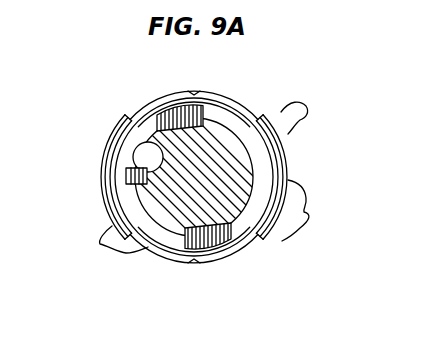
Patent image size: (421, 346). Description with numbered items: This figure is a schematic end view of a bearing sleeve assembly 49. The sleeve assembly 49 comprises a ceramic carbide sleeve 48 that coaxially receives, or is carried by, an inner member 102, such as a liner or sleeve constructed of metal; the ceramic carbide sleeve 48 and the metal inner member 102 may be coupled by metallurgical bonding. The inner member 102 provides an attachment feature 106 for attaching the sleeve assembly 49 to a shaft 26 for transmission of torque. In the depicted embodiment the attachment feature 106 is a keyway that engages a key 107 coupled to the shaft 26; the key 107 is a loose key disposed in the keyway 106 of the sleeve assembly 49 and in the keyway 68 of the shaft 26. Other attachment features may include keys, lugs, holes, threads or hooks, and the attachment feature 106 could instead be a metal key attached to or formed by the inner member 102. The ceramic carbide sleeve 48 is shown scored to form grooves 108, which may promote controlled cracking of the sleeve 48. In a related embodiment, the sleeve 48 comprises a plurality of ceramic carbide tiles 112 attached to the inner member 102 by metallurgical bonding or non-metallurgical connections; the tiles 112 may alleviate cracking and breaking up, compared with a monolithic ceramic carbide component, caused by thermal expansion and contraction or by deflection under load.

The shaft 26 is at (212, 192).
The ceramic carbide sleeve 48 is at (150, 103).
The sleeve assembly 49 is at (225, 81).
The keyway of shaft 68 is at (150, 143).
The inner member 102 is at (263, 162).
The attachment feature 106 is at (126, 180).
The key 107 is at (146, 170).
The grooves 108 is at (310, 216).
The ceramic carbide tiles 112 is at (296, 110).